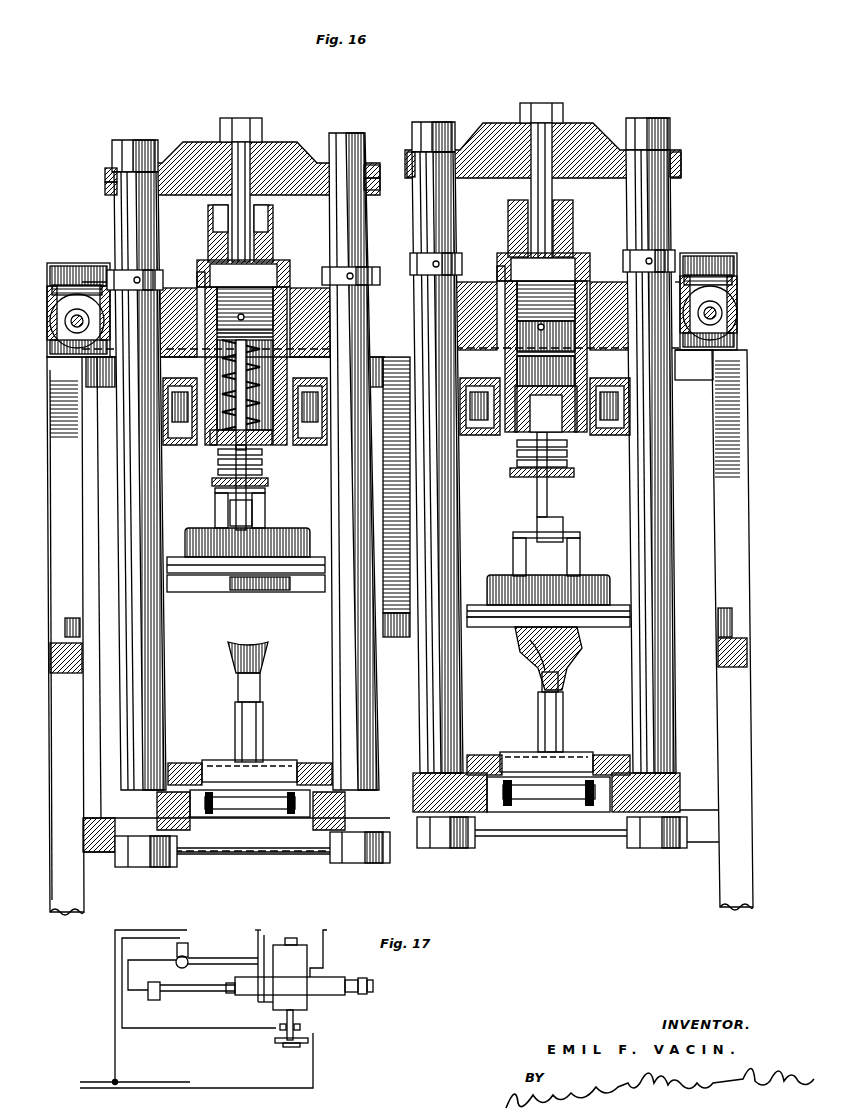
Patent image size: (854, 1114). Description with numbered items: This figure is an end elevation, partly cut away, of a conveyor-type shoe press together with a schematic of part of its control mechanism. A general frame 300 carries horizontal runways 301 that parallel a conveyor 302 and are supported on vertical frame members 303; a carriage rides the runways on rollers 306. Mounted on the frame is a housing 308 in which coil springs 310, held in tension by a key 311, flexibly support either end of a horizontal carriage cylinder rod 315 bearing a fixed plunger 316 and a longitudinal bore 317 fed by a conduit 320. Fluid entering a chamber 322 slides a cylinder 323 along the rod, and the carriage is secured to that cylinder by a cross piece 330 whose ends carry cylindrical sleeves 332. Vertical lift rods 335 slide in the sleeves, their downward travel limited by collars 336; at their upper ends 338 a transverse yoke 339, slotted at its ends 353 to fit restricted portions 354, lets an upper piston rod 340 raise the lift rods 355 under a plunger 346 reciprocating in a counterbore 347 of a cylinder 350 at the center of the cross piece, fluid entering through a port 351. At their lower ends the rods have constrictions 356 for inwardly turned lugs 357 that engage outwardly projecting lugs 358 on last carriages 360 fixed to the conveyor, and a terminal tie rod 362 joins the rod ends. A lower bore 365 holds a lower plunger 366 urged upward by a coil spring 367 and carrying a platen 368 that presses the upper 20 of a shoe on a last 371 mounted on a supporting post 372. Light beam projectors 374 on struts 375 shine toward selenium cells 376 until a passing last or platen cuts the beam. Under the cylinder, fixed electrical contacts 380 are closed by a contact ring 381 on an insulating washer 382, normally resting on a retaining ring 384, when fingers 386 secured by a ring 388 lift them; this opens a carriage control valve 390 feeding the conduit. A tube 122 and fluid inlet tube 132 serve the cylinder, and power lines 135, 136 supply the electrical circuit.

In FIG. 16, the upper 20 is at (575, 655).
In FIG. 16, the frame 300 is at (737, 528).
In FIG. 16, the horizontal runways 301 is at (165, 420).
In FIG. 16, the conveyor 302 is at (265, 817).
In FIG. 16, the vertical frame members 303 is at (47, 776).
In FIG. 16, the rollers 306 is at (200, 440).
In FIG. 17, the housing 308 is at (152, 1000).
In FIG. 16, the coil springs 310 is at (52, 289).
In FIG. 16, the key 311 is at (83, 265).
In FIG. 17, the carriage cylinder rod 315 is at (208, 993).
In FIG. 16, the fixed plunger 316 is at (72, 325).
In FIG. 16, the longitudinal bore 317 is at (58, 352).
In FIG. 17, the conduit 320 is at (132, 978).
In FIG. 16, the chamber 322 is at (65, 323).
In FIG. 16, the cylinder 323 is at (50, 318).
In FIG. 17, the cylinder 323 is at (334, 995).
In FIG. 16, the cross piece 330 is at (165, 380).
In FIG. 16, the cylindrical sleeves 332 is at (86, 380).
In FIG. 16, the vertical lift rods 335 is at (419, 714).
In FIG. 16, the collars 336 is at (114, 268).
In FIG. 16, the upper ends of the lift rods 338 is at (113, 142).
In FIG. 16, the transverse yoke 339 is at (284, 148).
In FIG. 16, the upper piston rod 340 is at (273, 226).
In FIG. 16, the plunger 346 is at (198, 278).
In FIG. 16, the counterbore 347 is at (272, 290).
In FIG. 16, the cylinder 350 is at (200, 262).
In FIG. 17, the cylinder 350 is at (278, 944).
In FIG. 16, the port 351 is at (278, 300).
In FIG. 16, the slotted ends 353 is at (105, 176).
In FIG. 16, the restricted portions 354 is at (105, 190).
In FIG. 16, the lift rods 355 is at (123, 716).
In FIG. 16, the constrictions 356 is at (417, 780).
In FIG. 16, the inwardly turned lugs 357 is at (177, 852).
In FIG. 16, the outwardly projecting lugs 358 is at (186, 763).
In FIG. 16, the last carriages 360 is at (268, 762).
In FIG. 16, the terminal tie rod 362 is at (232, 856).
In FIG. 16, the lower bore 365 is at (268, 448).
In FIG. 16, the plunger 366 is at (218, 330).
In FIG. 17, the plunger 366 is at (276, 1036).
In FIG. 16, the coil spring 367 is at (582, 436).
In FIG. 16, the platen 368 is at (285, 575).
In FIG. 16, the last 371 is at (528, 650).
In FIG. 16, the supporting post 372 is at (264, 735).
In FIG. 16, the fixed light beam projectors 374 is at (65, 628).
In FIG. 16, the struts 375 is at (50, 657).
In FIG. 16, the selenium cells 376 is at (397, 640).
In FIG. 16, the fixed electrical contacts 380 is at (216, 453).
In FIG. 17, the fixed electrical contacts 380 is at (280, 1027).
In FIG. 16, the electrical contact ring 381 is at (264, 472).
In FIG. 17, the electrical contact ring 381 is at (308, 1042).
In FIG. 16, the insulating washer 382 is at (218, 463).
In FIG. 16, the fixed retaining ring 384 is at (270, 485).
In FIG. 16, the upwardly projecting fingers 386 is at (536, 522).
In FIG. 16, the ring 388 is at (266, 520).
In FIG. 17, the carriage control valve 390 is at (186, 944).
In FIG. 17, the tube 122 is at (326, 940).
In FIG. 17, the tube 132 is at (257, 940).
In FIG. 17, the power line 135 is at (112, 1090).
In FIG. 17, the power line 136 is at (105, 1081).